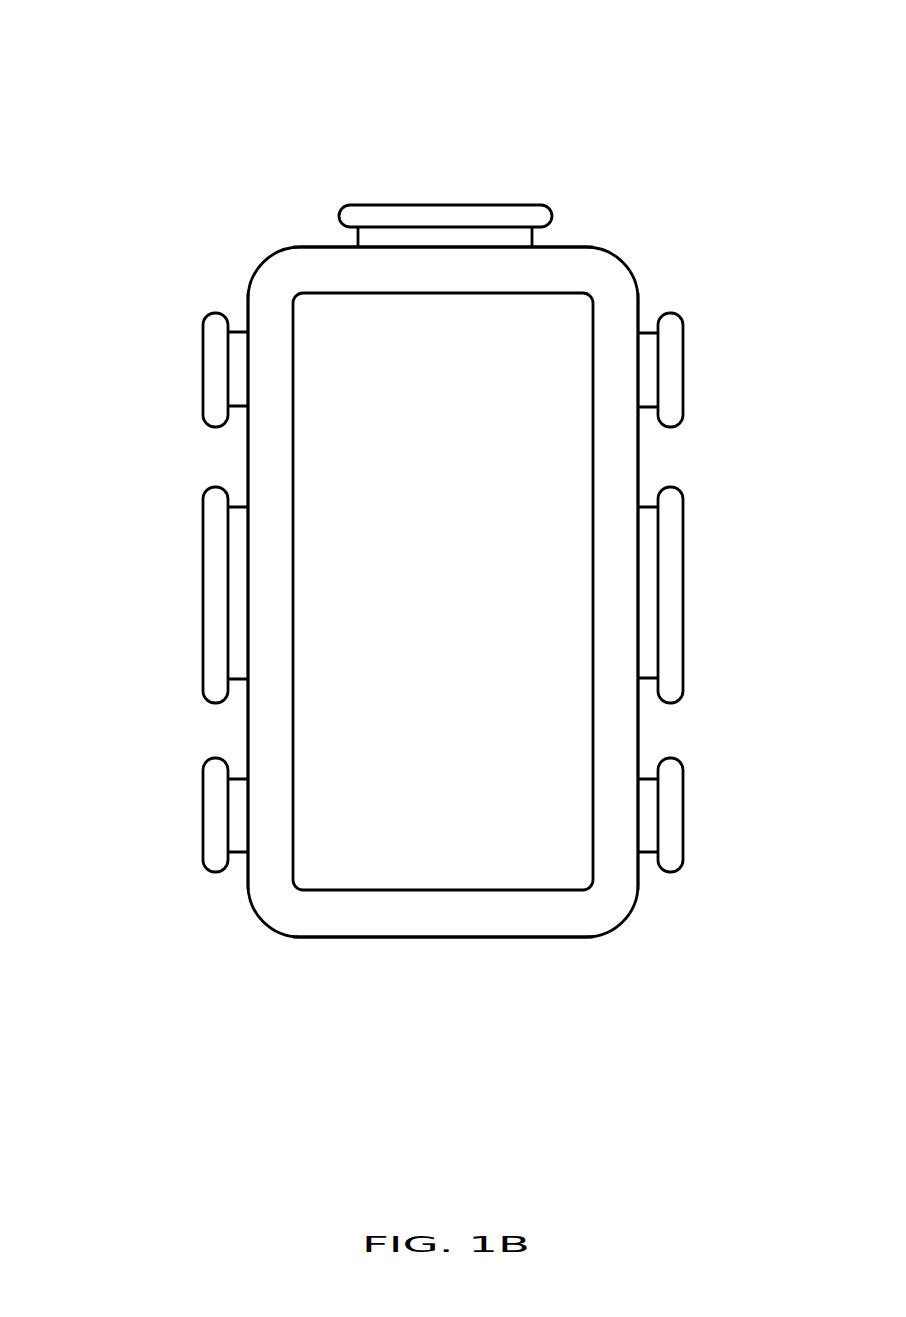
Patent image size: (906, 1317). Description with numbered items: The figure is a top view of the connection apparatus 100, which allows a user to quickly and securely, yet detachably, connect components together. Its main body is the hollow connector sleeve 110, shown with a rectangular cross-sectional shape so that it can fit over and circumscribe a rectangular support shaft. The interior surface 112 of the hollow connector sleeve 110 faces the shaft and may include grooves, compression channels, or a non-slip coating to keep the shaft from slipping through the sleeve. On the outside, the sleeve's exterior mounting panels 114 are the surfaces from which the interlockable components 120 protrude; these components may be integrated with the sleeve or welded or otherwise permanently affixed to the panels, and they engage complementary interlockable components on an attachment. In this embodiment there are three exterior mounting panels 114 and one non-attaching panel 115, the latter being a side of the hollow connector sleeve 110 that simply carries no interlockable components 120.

The connection apparatus 100 is at (122, 93).
The hollow connector sleeve 110 is at (280, 268).
The interior surface 112 is at (587, 374).
The exterior mounting panel 114 is at (321, 244).
The non-attaching panel 115 is at (432, 940).
The interlockable component 120 is at (479, 216).